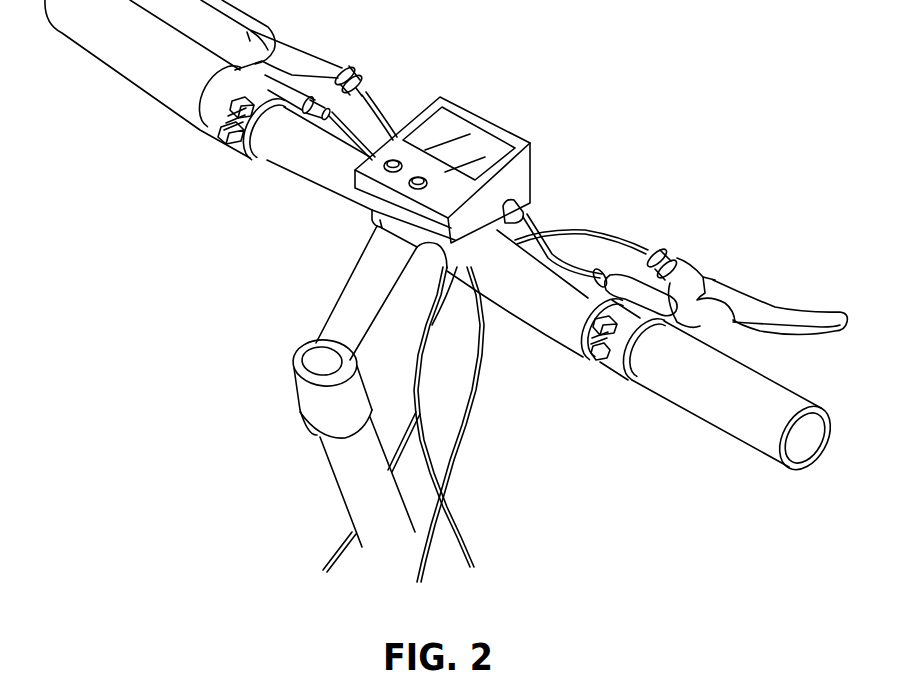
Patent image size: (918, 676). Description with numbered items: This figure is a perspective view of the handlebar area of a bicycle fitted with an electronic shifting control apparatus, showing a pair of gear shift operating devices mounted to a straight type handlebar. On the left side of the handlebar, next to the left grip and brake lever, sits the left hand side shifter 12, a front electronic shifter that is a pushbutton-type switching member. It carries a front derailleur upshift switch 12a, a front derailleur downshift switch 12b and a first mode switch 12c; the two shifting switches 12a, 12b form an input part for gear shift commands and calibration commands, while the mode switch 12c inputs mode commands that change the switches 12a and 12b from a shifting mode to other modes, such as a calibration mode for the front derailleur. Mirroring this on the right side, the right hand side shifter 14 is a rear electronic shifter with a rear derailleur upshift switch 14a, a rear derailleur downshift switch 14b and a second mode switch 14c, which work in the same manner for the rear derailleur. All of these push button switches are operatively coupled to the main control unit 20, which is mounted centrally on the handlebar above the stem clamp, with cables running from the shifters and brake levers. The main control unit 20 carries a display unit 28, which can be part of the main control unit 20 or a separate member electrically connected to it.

The left hand side shifter 12 is at (190, 133).
The front derailleur upshift switch 12a is at (225, 106).
The front derailleur downshift switch 12b is at (222, 137).
The first mode switch 12c is at (228, 114).
The right hand side shifter 14 is at (564, 373).
The rear derailleur upshift switch 14a is at (590, 320).
The rear derailleur downshift switch 14b is at (594, 355).
The second mode switch 14c is at (583, 328).
The main control unit 20 is at (482, 161).
The display unit 28 is at (493, 148).